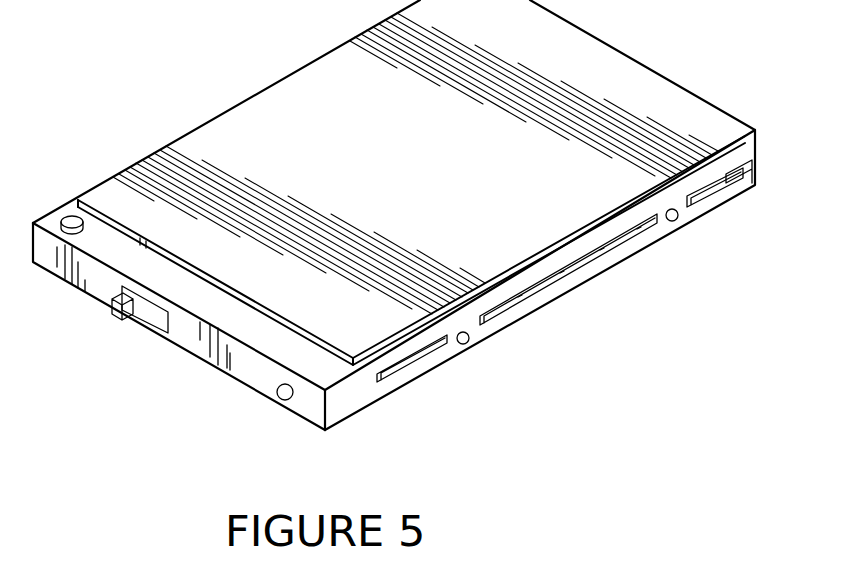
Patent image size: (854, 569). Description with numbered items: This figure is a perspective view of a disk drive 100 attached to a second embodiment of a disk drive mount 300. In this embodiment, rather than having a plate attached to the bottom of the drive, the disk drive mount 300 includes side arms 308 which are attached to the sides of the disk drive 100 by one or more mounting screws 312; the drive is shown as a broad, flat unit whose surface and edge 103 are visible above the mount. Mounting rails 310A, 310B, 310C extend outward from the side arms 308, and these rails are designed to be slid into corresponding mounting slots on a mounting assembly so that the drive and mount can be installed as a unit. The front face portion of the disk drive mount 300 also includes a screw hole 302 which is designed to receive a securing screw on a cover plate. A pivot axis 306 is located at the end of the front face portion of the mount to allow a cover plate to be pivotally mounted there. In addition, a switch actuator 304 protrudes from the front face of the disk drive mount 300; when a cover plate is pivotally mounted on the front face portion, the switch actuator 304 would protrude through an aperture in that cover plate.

The disk drive 100 is at (310, 88).
The edge of circuit board 103 is at (653, 72).
The disk drive mount 300 is at (340, 410).
The screw hole 302 is at (283, 400).
The switch actuator 304 is at (110, 310).
The pivot axis 306 is at (72, 216).
The side arms 308 is at (625, 258).
The mounting rail 310A is at (417, 367).
The mounting rail 310B is at (563, 287).
The mounting rail 310C is at (722, 193).
The mounting screws 312 is at (467, 343).